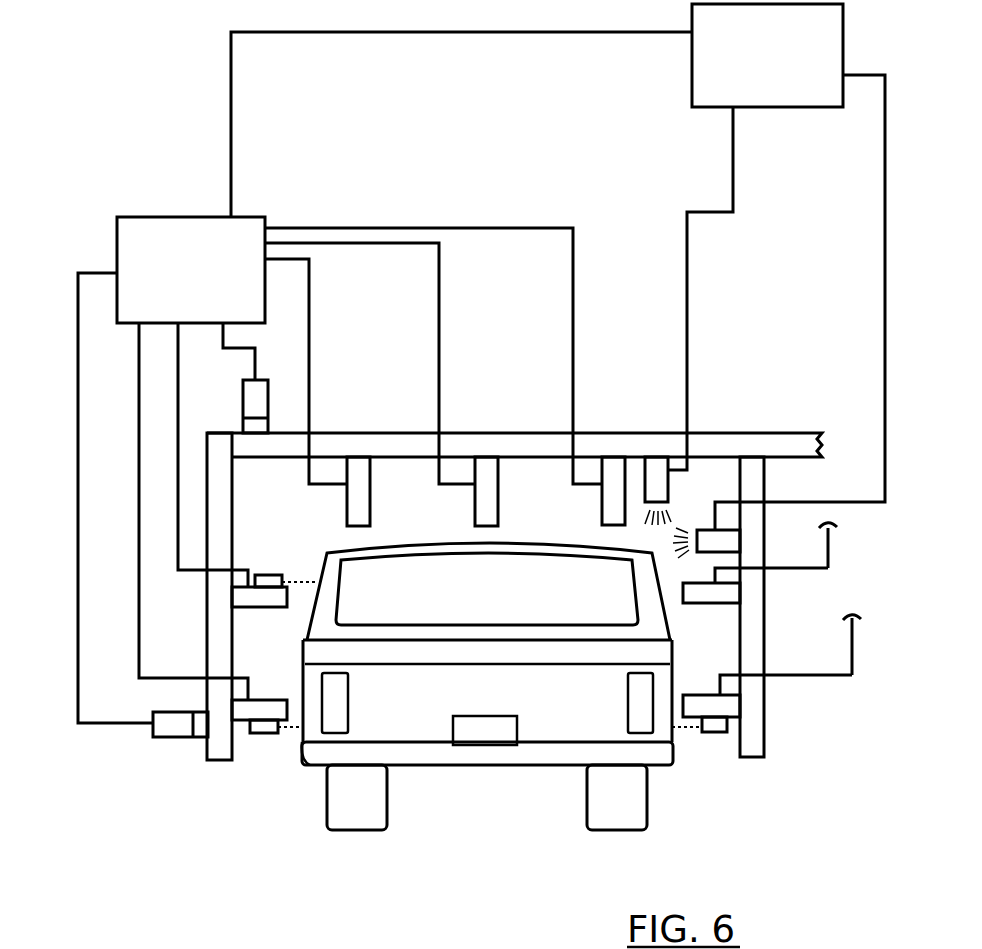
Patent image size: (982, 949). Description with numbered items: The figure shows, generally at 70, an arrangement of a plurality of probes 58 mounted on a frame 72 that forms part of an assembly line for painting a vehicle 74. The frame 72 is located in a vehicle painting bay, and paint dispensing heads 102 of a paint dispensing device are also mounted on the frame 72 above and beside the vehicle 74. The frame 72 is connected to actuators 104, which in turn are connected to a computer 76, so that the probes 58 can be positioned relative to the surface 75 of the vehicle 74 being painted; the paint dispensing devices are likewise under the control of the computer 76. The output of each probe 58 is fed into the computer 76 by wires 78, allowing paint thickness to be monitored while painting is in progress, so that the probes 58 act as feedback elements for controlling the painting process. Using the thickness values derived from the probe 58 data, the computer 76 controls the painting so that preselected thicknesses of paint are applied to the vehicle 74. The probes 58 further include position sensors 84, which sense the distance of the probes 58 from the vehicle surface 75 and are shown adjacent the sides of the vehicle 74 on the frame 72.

The paint thickness measuring arrangement 70 is at (786, 286).
The frame 72 is at (735, 447).
The vehicle 74 is at (317, 745).
The surface of vehicle 75 is at (585, 720).
The computer 76 is at (187, 235).
The wires 78 is at (289, 257).
The probes 58 is at (475, 500).
The position sensors 84 is at (270, 575).
The paint dispensing heads 102 is at (670, 493).
The actuators 104 is at (243, 397).